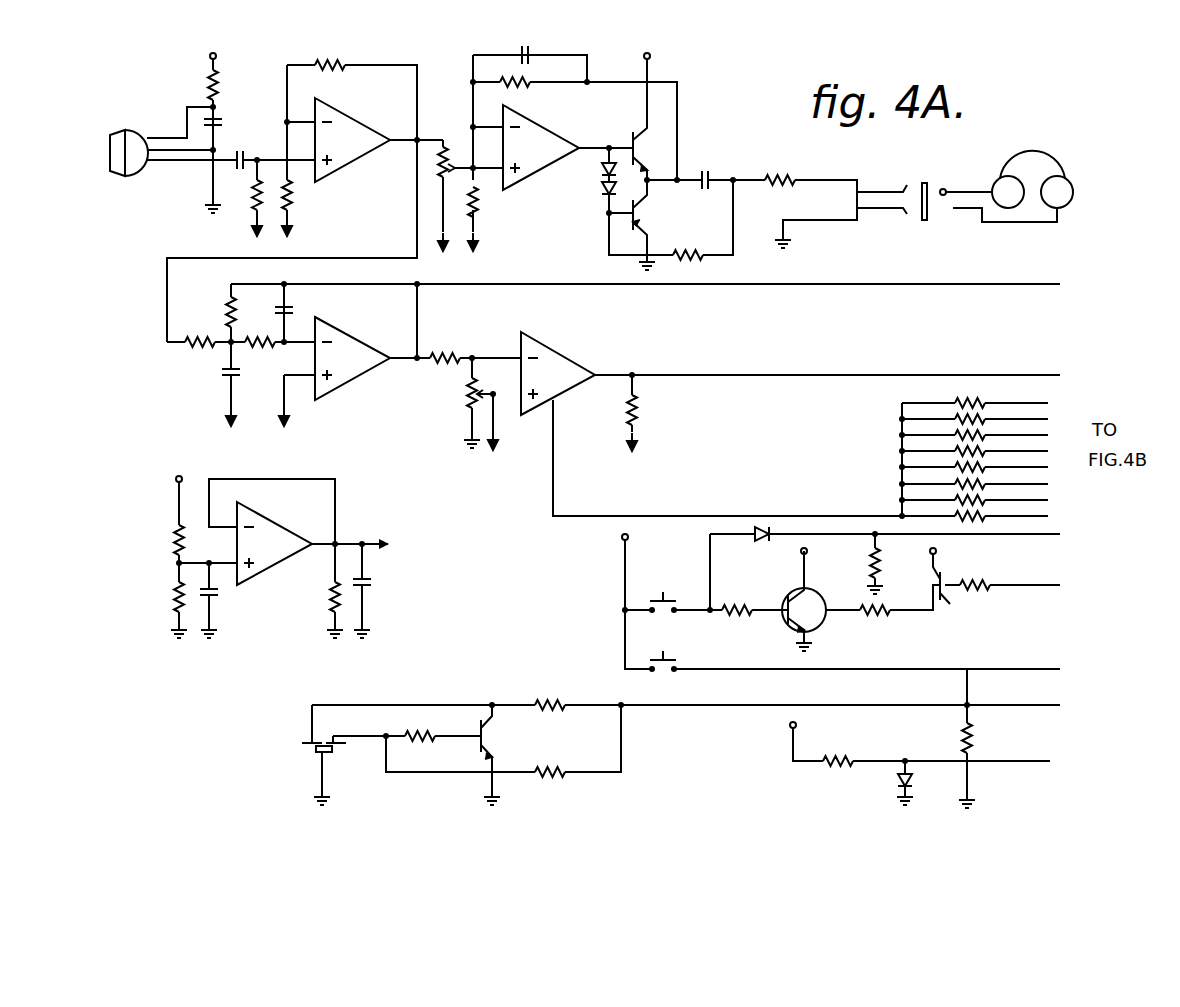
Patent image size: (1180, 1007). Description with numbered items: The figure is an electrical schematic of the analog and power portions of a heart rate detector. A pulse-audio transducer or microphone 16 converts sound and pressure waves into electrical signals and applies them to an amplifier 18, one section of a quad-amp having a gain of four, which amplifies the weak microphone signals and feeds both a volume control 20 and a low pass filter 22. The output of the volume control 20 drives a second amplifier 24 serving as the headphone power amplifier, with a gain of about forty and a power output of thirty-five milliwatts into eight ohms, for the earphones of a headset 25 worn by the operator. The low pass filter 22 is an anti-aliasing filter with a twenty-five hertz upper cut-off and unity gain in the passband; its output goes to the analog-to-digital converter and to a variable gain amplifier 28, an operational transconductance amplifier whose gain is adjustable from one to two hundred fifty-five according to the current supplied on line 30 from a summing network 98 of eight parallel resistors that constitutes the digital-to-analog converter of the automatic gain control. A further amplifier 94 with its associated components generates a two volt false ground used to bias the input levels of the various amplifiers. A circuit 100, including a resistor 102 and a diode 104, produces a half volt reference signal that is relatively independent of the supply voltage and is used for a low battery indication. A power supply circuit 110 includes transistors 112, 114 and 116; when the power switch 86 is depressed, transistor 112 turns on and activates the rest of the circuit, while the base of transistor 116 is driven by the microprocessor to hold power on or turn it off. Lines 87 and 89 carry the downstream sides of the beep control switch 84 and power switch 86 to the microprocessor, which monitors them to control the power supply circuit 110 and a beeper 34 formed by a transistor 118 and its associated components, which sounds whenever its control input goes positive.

The pulse-audio transducer 16 is at (141, 132).
The amplifier 18 is at (375, 162).
The volume control 20 is at (452, 162).
The low pass filter 22 is at (344, 398).
The second amplifier 24 is at (532, 214).
The headset 25 is at (1071, 182).
The variable gain amplifier 28 is at (568, 344).
The line 30 is at (553, 458).
The beeper 34 is at (681, 719).
The beep control switch 84 is at (670, 660).
The power switch 86 is at (667, 601).
The line 87 is at (758, 669).
The line 89 is at (984, 534).
The amplifier 94 is at (316, 514).
The summing network 98 is at (878, 445).
The circuit 100 is at (876, 741).
The resistor 102 is at (826, 769).
The diode 104 is at (897, 790).
The power supply circuit 110 is at (803, 599).
The transistor 112 is at (784, 620).
The transistor 114 is at (826, 600).
The transistor 116 is at (950, 605).
The transistor 118 is at (476, 742).